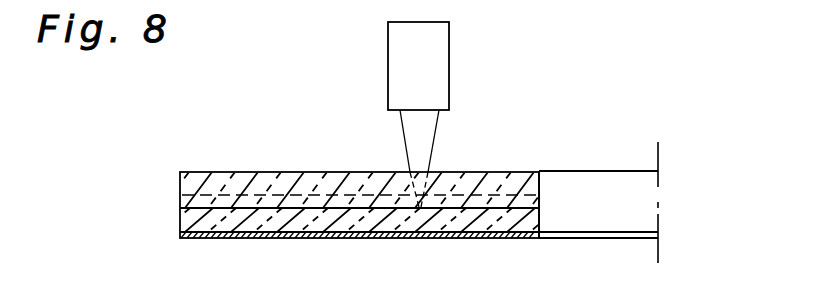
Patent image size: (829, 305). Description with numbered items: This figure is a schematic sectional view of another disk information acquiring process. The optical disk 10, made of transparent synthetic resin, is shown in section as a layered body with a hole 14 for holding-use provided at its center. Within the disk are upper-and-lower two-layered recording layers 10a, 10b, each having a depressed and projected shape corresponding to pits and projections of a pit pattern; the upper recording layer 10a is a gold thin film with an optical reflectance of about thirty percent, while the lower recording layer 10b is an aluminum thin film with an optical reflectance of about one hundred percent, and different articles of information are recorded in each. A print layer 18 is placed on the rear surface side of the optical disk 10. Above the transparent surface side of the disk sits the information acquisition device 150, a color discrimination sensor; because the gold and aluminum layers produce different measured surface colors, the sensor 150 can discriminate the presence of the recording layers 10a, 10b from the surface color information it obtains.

The optical disk 10 is at (348, 182).
The upper recording layer 10a is at (285, 194).
The lower recording layer 10b is at (268, 210).
The print layer 18 is at (448, 238).
The hole 14 is at (603, 187).
The information acquisition device 150 is at (434, 48).